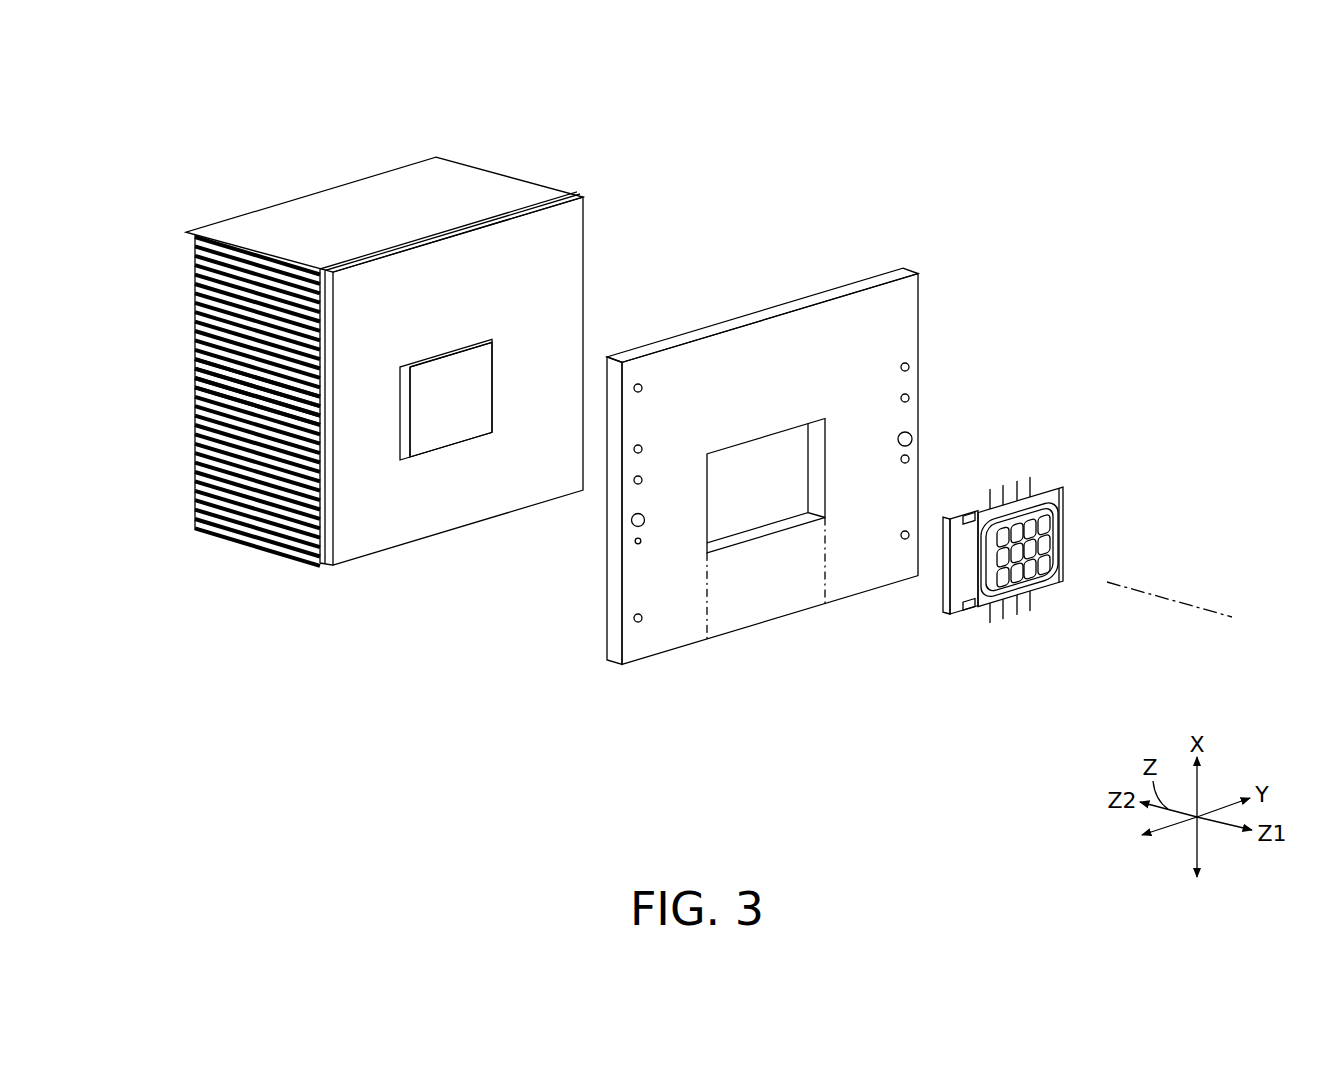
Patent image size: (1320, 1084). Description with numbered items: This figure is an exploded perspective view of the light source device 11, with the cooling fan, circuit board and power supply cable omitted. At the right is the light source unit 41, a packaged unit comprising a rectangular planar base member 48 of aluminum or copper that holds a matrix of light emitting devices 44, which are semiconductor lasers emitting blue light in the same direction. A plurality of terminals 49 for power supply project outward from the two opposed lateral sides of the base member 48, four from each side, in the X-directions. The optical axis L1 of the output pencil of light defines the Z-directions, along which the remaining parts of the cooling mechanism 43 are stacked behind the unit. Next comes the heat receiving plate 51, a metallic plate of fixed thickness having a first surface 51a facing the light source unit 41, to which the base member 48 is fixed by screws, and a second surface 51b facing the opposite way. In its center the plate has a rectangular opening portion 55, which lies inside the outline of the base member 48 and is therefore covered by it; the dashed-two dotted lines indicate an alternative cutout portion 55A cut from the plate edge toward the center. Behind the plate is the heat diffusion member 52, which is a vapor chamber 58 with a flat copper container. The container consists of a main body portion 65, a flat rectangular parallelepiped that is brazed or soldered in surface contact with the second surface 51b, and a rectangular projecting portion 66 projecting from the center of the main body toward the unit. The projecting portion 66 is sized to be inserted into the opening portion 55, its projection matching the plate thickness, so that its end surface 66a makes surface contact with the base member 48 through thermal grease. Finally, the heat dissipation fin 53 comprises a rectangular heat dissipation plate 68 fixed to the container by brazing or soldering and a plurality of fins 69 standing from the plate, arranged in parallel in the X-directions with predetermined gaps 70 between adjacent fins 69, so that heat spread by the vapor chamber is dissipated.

The light source device 11 is at (310, 147).
The cooling mechanism 43 is at (583, 170).
The heat dissipation fin 53 is at (288, 226).
The fins 69 is at (225, 320).
The gaps 70 is at (210, 388).
The heat dissipation plate 68 is at (322, 505).
The heat diffusion member 52 is at (375, 537).
The vapor chamber 58 is at (384, 394).
The main body portion 65 is at (418, 522).
The projecting portion 66 is at (447, 447).
The end surface 66a is at (463, 412).
The heat receiving plate 51 is at (780, 604).
The first surface 51a is at (850, 580).
The second surface 51b is at (603, 614).
The opening portion 55 is at (765, 445).
The cutout portion 55A is at (707, 612).
The light source unit 41 is at (1052, 466).
The base member 48 is at (980, 511).
The terminals 49 is at (1031, 485).
The light emitting devices 44 is at (1030, 562).
The optical axis L1 is at (1202, 607).